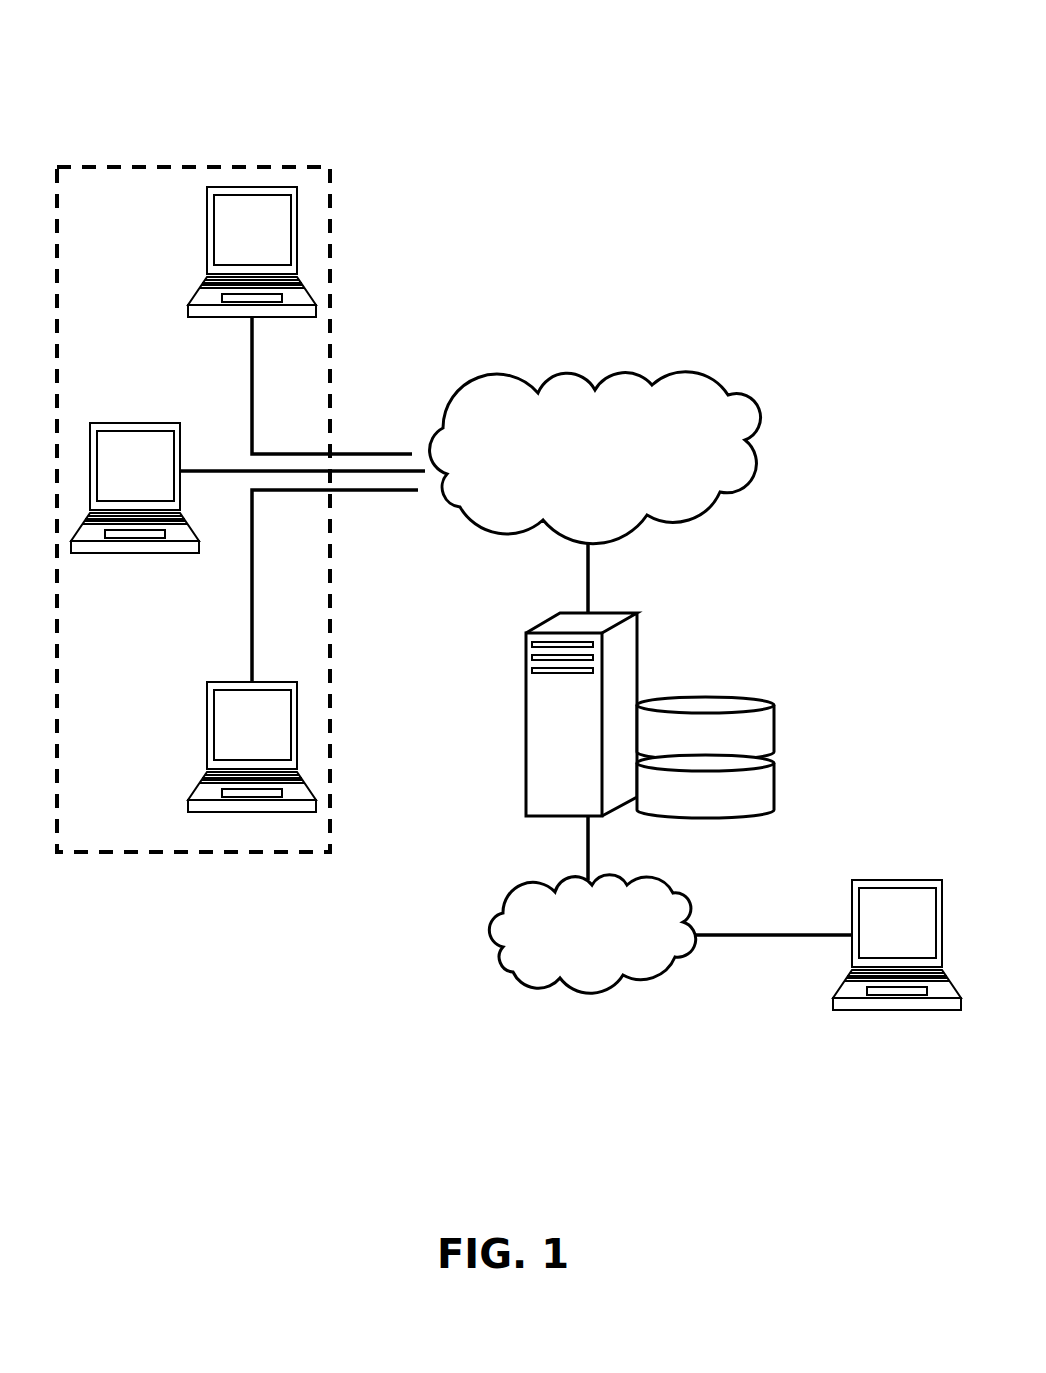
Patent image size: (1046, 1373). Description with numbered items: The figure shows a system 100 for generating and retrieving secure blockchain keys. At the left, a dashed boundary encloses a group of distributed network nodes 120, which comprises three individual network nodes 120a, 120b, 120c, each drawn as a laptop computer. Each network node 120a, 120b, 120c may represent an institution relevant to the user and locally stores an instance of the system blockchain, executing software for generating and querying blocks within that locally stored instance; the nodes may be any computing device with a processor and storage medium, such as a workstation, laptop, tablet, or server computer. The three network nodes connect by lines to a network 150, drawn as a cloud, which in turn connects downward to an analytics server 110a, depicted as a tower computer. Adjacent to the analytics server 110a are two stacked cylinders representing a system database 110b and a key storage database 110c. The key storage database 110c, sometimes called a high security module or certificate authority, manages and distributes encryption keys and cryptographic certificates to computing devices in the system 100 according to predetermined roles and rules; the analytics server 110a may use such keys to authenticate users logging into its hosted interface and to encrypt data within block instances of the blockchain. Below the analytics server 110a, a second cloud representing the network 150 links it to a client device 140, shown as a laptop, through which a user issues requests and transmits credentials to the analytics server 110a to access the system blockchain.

The system 100 is at (120, 63).
The distributed network nodes 120 is at (108, 826).
The network node 120a is at (303, 651).
The network node 120b is at (248, 488).
The network node 120c is at (300, 320).
The network 150 is at (641, 682).
The analytics server 110a is at (581, 714).
The system database 110b is at (705, 786).
The key storage database 110c is at (705, 728).
The client device 140 is at (897, 945).